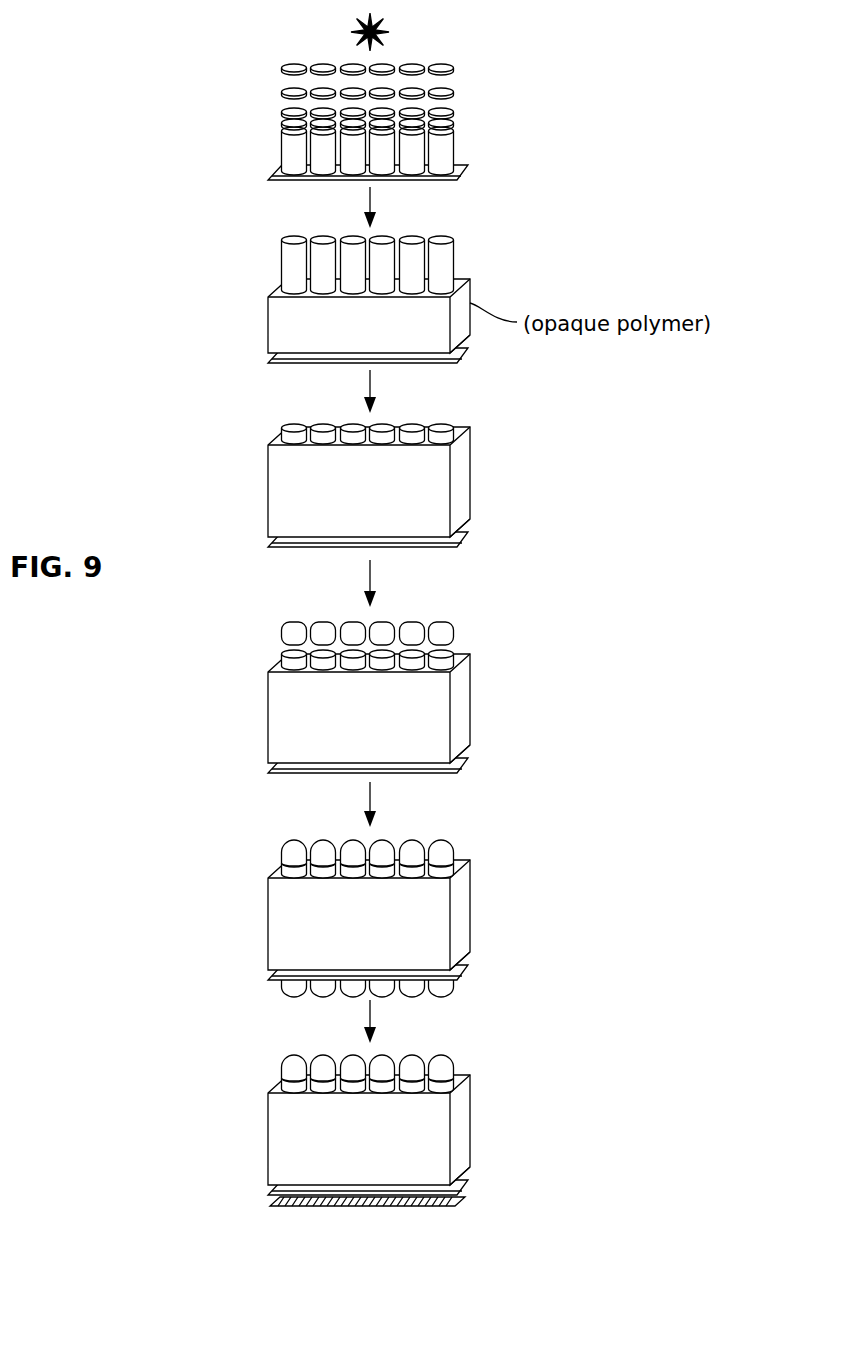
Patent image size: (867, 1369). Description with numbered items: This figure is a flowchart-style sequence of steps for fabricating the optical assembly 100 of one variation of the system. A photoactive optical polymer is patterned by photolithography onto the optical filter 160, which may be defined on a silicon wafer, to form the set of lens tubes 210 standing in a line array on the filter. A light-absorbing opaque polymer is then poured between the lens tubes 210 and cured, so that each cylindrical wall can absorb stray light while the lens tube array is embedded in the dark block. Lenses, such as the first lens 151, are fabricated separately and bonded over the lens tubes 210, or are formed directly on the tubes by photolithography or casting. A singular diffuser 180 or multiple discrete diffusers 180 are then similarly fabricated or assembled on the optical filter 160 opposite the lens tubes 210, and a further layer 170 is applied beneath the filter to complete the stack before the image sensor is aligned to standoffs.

The light emitting device assembly 100 is at (231, 68).
The set of lens tubes 210 is at (455, 140).
The optical filter 160 is at (466, 167).
The first lens 151 is at (454, 633).
The diffuser 180 is at (456, 983).
The reflective layer 170 is at (458, 1201).